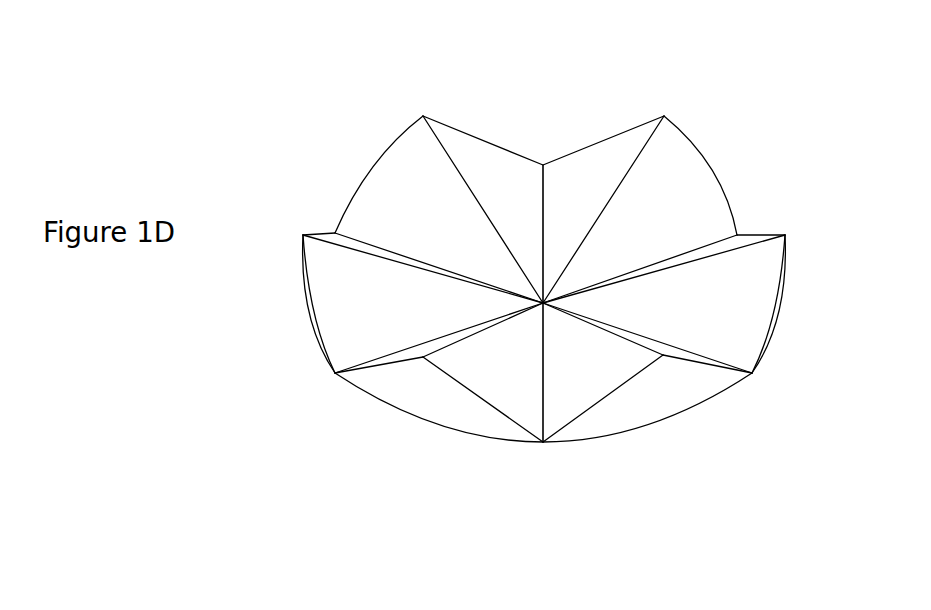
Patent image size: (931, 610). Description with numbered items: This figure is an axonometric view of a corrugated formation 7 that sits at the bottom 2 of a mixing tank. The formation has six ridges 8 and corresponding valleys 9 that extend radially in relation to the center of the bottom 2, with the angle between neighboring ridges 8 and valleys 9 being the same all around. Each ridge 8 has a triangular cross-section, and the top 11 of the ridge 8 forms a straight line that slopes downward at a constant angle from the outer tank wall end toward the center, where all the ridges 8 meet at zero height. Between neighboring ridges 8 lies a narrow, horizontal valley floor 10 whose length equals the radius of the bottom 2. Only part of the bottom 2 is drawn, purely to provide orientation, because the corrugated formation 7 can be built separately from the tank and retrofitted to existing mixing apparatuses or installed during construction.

The bottom 2 is at (692, 413).
The corrugated formation 7 is at (282, 158).
The ridge 8 is at (330, 272).
The valley 9 is at (745, 338).
The valley floor 10 is at (740, 237).
The top of the ridge 11 is at (640, 152).